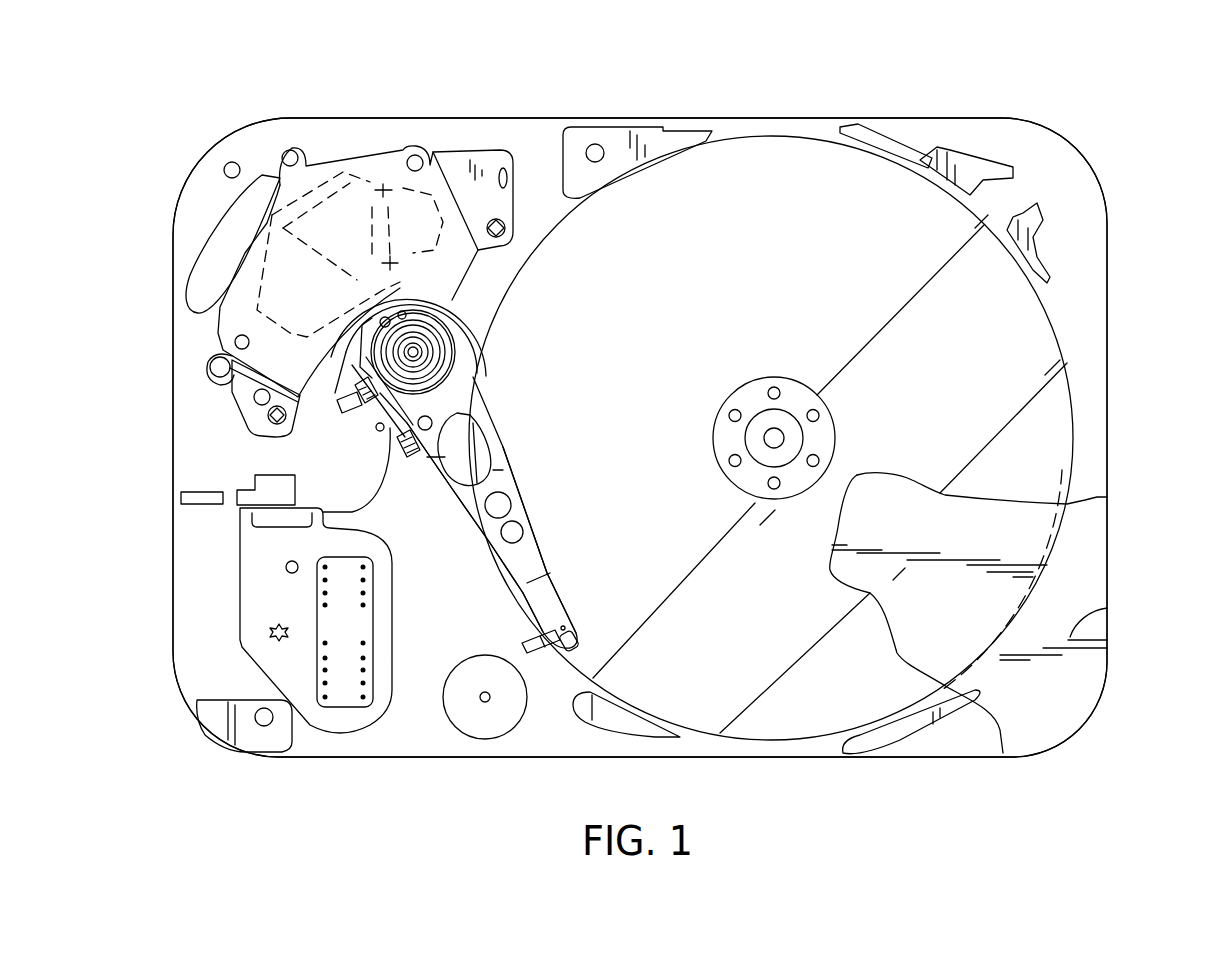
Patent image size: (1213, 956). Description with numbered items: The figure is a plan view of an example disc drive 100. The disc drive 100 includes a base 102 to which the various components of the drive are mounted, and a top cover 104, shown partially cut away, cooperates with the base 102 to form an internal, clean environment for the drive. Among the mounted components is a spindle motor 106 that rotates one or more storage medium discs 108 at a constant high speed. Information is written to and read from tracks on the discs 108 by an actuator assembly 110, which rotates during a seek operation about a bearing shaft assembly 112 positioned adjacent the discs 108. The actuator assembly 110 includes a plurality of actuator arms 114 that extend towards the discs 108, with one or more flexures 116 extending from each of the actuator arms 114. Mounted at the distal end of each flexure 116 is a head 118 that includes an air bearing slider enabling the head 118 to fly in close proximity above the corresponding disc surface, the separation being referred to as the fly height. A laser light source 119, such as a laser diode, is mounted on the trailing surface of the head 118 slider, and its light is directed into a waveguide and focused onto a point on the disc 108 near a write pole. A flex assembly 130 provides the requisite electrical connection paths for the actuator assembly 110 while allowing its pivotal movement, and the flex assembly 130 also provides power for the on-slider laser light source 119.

The disc drive 100 is at (146, 111).
The base 102 is at (533, 142).
The top cover 104 is at (1077, 640).
The spindle motor 106 is at (776, 437).
The storage medium disc 108 is at (750, 193).
The actuator assembly 110 is at (507, 446).
The bearing shaft assembly 112 is at (414, 352).
The actuator arm 114 is at (522, 497).
The flexure 116 is at (560, 587).
The head 118 is at (590, 640).
The laser light source 119 is at (594, 644).
The flex assembly 130 is at (389, 502).